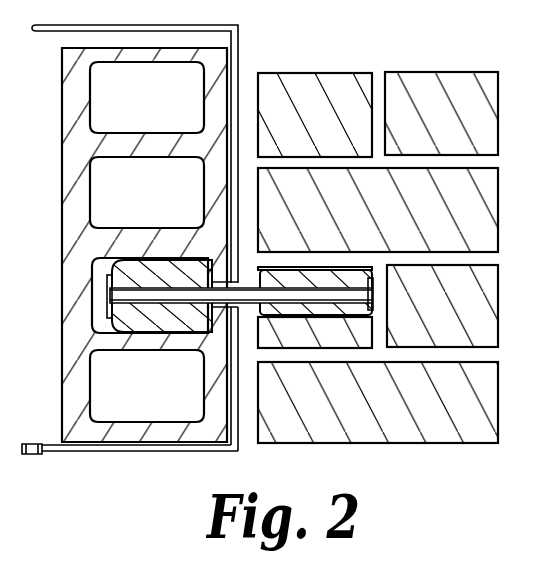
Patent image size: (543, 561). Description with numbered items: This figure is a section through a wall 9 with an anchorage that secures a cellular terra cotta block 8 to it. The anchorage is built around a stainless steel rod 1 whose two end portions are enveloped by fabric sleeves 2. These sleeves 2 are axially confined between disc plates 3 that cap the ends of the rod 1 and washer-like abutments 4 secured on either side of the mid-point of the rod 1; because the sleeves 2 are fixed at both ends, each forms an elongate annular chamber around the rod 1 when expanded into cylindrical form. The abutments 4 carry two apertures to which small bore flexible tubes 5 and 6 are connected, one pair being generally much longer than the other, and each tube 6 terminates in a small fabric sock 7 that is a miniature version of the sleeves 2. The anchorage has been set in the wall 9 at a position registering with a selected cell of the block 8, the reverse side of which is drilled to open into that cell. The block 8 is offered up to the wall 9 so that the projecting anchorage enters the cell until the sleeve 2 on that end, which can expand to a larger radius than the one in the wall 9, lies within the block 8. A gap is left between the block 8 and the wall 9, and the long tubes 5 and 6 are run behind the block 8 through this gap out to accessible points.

The stainless steel rod 1 is at (300, 309).
The fabric sleeve 2 is at (117, 328).
The disc plate 3 is at (92, 283).
The abutment 4 is at (258, 283).
The flexible tube 5 is at (205, 25).
The flexible tube 6 is at (175, 452).
The sock 7 is at (33, 453).
The terra cotta block 8 is at (78, 358).
The wall 9 is at (0, 220).